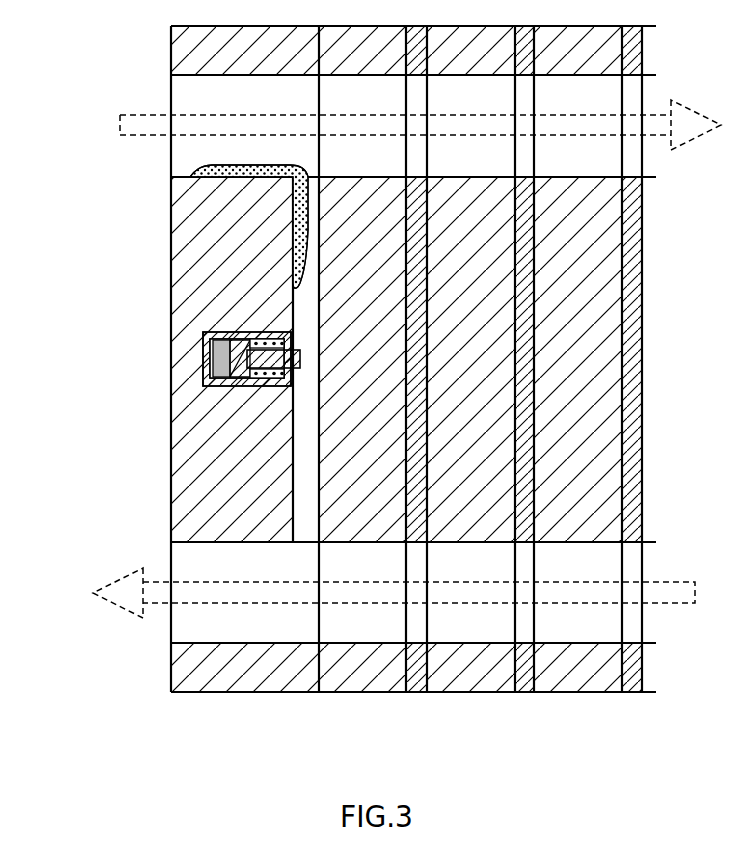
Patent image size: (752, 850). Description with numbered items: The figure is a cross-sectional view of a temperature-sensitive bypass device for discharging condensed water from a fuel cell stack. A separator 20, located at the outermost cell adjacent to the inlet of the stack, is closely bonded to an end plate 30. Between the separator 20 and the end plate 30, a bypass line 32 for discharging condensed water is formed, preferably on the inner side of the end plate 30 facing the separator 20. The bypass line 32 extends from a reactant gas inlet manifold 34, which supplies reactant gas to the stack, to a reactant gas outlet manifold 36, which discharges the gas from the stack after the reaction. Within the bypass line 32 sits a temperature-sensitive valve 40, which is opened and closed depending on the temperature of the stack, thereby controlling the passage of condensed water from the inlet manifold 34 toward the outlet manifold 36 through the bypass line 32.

The separator 20 is at (367, 512).
The end plate 30 is at (376, 359).
The bypass line 32 is at (300, 413).
The inlet manifold 34 is at (190, 150).
The outlet manifold 36 is at (197, 560).
The temperature-sensitive valve 40 is at (203, 342).